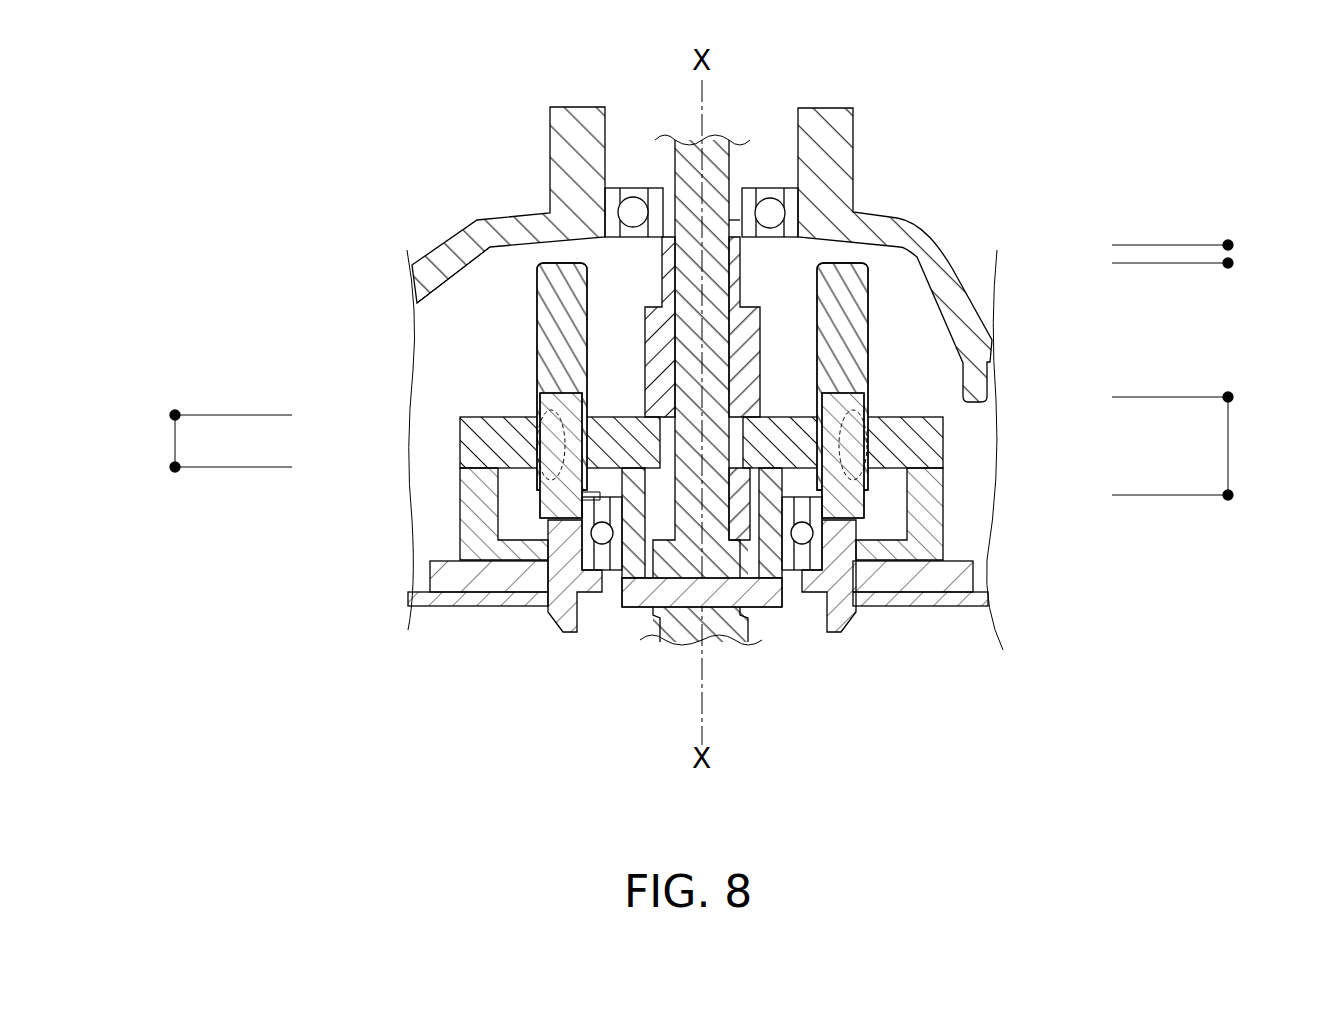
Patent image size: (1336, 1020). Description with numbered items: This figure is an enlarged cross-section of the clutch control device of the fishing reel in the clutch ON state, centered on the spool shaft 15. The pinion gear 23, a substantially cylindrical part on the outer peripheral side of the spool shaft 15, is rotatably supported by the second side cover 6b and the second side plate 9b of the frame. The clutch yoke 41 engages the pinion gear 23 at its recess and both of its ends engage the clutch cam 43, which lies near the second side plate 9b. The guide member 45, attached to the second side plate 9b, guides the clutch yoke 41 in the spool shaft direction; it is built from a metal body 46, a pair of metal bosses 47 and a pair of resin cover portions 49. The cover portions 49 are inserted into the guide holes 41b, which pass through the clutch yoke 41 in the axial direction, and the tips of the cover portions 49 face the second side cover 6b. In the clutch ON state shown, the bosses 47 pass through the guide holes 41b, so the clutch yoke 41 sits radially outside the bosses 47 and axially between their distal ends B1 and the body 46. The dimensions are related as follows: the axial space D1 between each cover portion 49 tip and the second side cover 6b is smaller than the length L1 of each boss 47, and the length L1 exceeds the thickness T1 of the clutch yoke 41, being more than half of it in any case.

The spool shaft 15 is at (725, 650).
The second side cover 6b is at (865, 235).
The guide member 45 is at (512, 297).
The pinion gear 23 is at (750, 345).
The clutch yoke 41 is at (480, 445).
The guide holes 41b is at (545, 480).
The body 46 is at (905, 515).
The cover portions 49 is at (553, 318).
The bosses 47 is at (545, 402).
The distal end of the boss B1 is at (553, 385).
The clutch cam 43 is at (470, 547).
The second side plate 9b is at (493, 600).
The thickness of the clutch yoke T1 is at (206, 441).
The space between the cover portion tips and the second side cover D1 is at (1198, 255).
The length of the boss L1 is at (1195, 446).